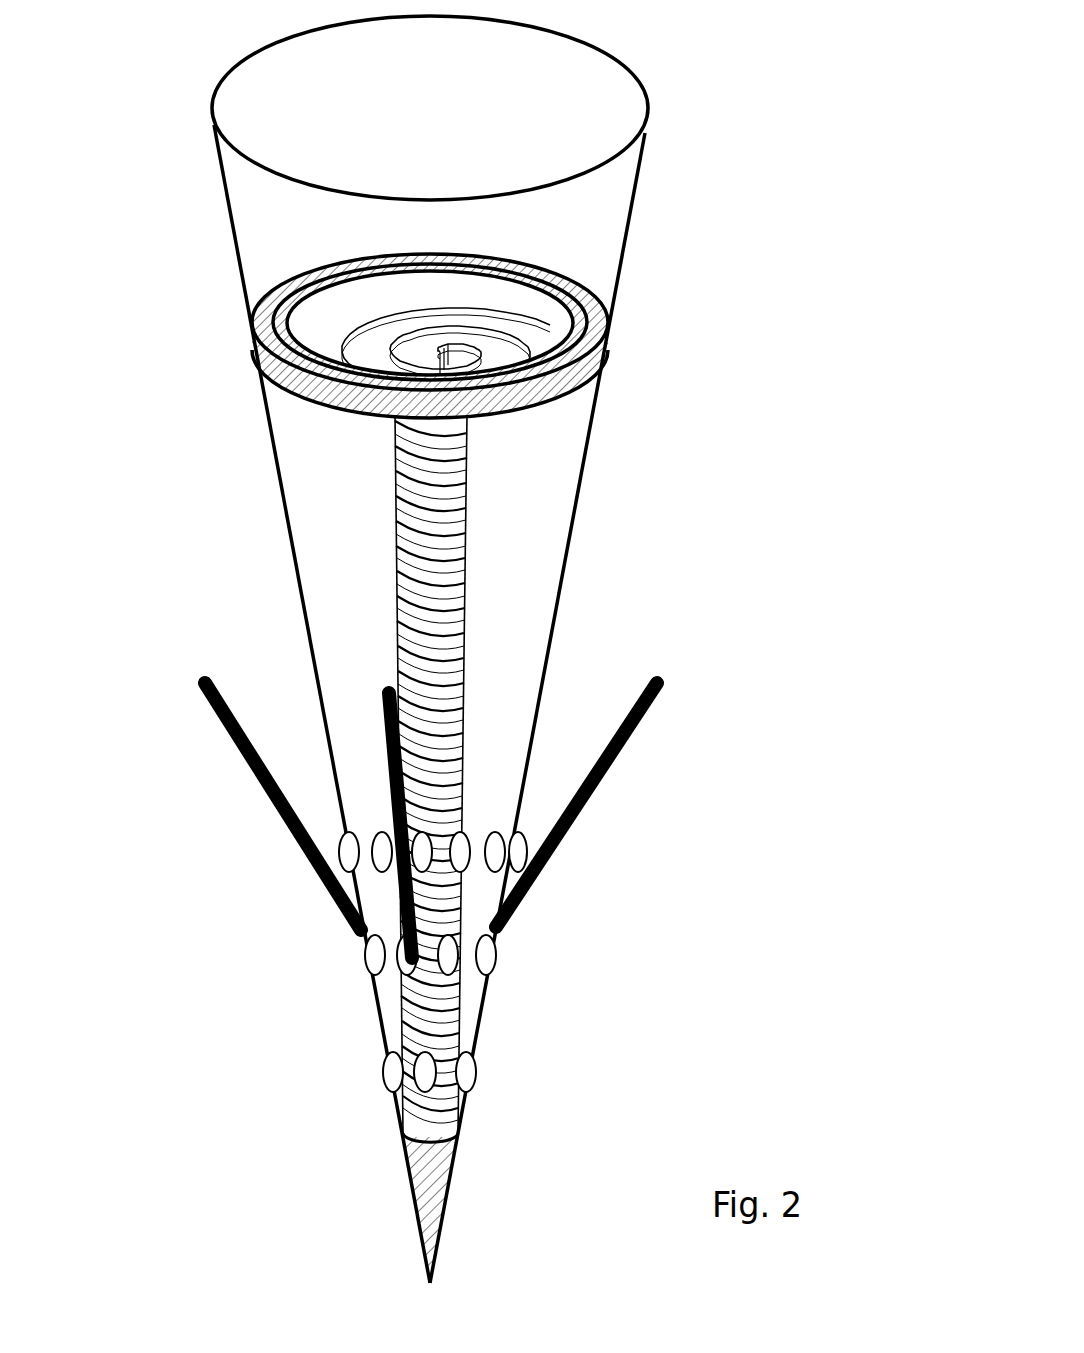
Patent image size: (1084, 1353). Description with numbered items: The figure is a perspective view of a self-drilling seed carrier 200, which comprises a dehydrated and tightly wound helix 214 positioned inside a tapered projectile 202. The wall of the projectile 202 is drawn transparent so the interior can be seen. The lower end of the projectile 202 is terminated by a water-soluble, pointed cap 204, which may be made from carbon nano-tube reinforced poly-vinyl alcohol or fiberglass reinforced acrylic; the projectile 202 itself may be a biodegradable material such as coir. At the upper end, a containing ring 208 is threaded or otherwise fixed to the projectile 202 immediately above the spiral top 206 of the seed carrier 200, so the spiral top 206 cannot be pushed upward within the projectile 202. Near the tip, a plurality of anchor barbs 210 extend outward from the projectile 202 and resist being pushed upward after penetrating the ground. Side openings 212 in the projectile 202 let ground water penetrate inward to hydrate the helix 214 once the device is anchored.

The self-drilling seed carrier 200 is at (470, 513).
The tapered projectile 202 is at (628, 222).
The water-soluble pointed cap 204 is at (450, 1196).
The spiral top 206 is at (323, 325).
The containing ring 208 is at (598, 300).
The anchor barbs 210 is at (585, 806).
The side openings 212 is at (452, 955).
The helix 214 is at (465, 634).